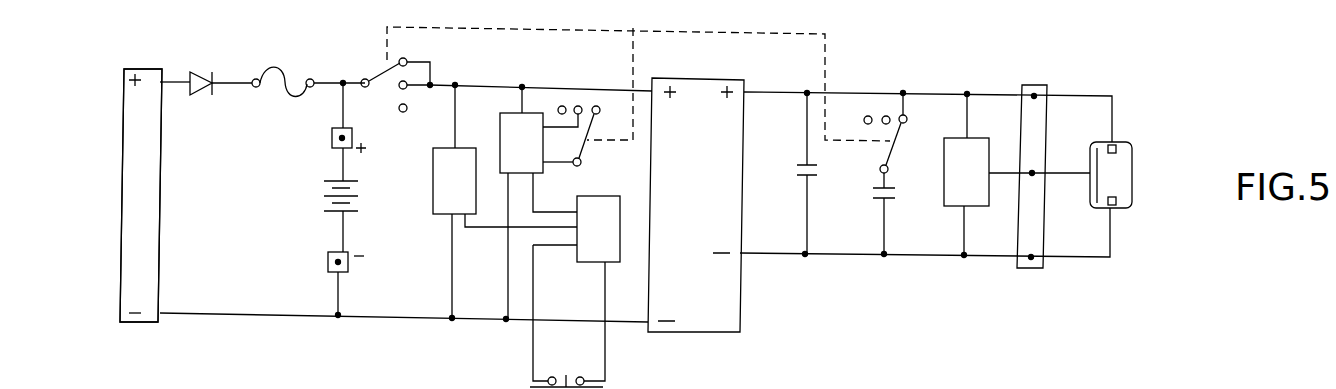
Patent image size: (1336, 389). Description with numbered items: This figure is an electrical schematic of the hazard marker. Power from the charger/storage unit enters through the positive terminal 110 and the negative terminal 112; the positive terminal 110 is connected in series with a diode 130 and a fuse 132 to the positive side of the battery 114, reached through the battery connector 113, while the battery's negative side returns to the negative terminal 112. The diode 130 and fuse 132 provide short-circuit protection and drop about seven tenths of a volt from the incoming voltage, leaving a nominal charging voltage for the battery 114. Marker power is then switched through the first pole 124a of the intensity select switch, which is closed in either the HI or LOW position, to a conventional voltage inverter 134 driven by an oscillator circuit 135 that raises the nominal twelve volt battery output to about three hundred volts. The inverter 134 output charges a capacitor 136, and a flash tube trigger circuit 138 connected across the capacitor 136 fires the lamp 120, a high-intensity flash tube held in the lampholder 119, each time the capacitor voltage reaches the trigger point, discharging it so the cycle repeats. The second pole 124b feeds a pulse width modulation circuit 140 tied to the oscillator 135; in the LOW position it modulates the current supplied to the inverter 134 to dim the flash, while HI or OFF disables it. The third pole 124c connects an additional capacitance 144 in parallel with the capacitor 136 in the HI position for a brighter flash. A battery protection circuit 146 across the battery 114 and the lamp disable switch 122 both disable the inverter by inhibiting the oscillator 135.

The positive terminal 110 is at (168, 68).
The negative terminal 112 is at (165, 318).
The battery connector 113 is at (334, 140).
The battery 114 is at (316, 199).
The lampholder 119 is at (1035, 85).
The lamp 120 is at (1133, 175).
The lamp disable switch 122 is at (566, 369).
The first pole of intensity select switch 124a is at (381, 63).
The second pole of intensity select switch 124b is at (588, 152).
The third pole of intensity select switch 124c is at (900, 150).
The diode 130 is at (197, 100).
The fuse 132 is at (273, 95).
The voltage inverter 134 is at (694, 78).
The oscillator circuit 135 is at (589, 196).
The capacitor 136 is at (811, 184).
The flash tube trigger circuit 138 is at (975, 137).
The pulse width modulation circuit 140 is at (500, 148).
The additional capacitance 144 is at (889, 205).
The battery protection circuit 146 is at (443, 214).